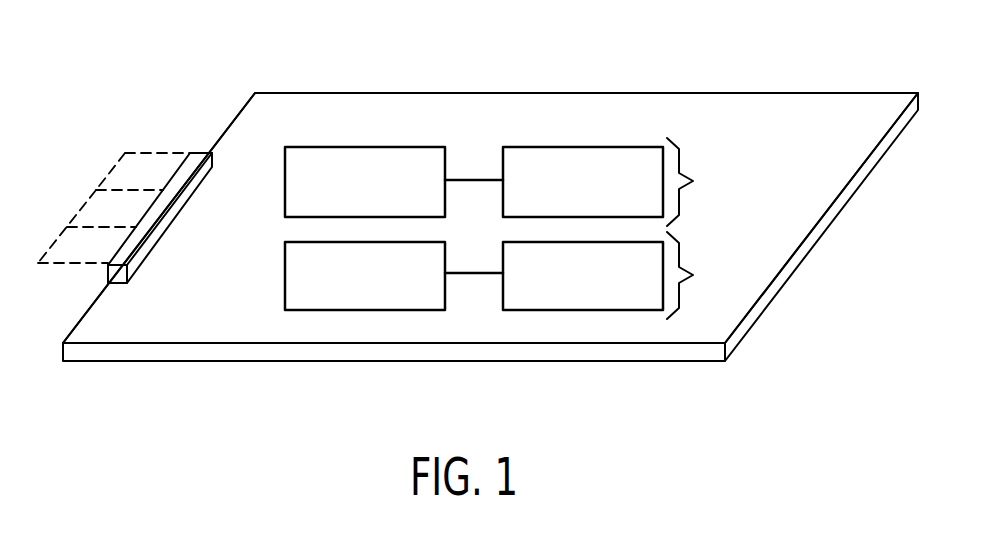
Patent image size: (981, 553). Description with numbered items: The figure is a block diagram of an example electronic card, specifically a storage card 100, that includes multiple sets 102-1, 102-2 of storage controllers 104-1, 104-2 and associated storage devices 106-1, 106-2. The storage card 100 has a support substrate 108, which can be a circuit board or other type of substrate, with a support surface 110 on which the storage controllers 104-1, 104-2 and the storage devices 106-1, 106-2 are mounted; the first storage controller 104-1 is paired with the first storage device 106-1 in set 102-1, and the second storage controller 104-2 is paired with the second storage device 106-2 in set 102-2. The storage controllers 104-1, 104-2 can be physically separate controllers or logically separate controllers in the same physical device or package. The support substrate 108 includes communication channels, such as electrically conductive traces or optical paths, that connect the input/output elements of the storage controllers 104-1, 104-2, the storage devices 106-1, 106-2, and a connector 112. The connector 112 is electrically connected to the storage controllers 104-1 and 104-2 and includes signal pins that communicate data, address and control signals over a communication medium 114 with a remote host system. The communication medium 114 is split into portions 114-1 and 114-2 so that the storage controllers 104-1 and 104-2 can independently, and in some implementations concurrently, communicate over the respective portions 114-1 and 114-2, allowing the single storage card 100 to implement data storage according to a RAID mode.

The storage card 100 is at (733, 50).
The first set of storage controller and storage device 102-1 is at (602, 182).
The second set of storage controller and storage device 102-2 is at (602, 275).
The first storage controller 104-1 is at (365, 147).
The second storage controller 104-2 is at (365, 310).
The first storage device 106-1 is at (583, 147).
The second storage device 106-2 is at (584, 310).
The support substrate 108 is at (144, 346).
The support surface 110 is at (198, 323).
The connector 112 is at (107, 273).
The communication medium 114 is at (157, 160).
The first portion of communication medium 114-1 is at (132, 188).
The second portion of communication medium 114-2 is at (100, 227).